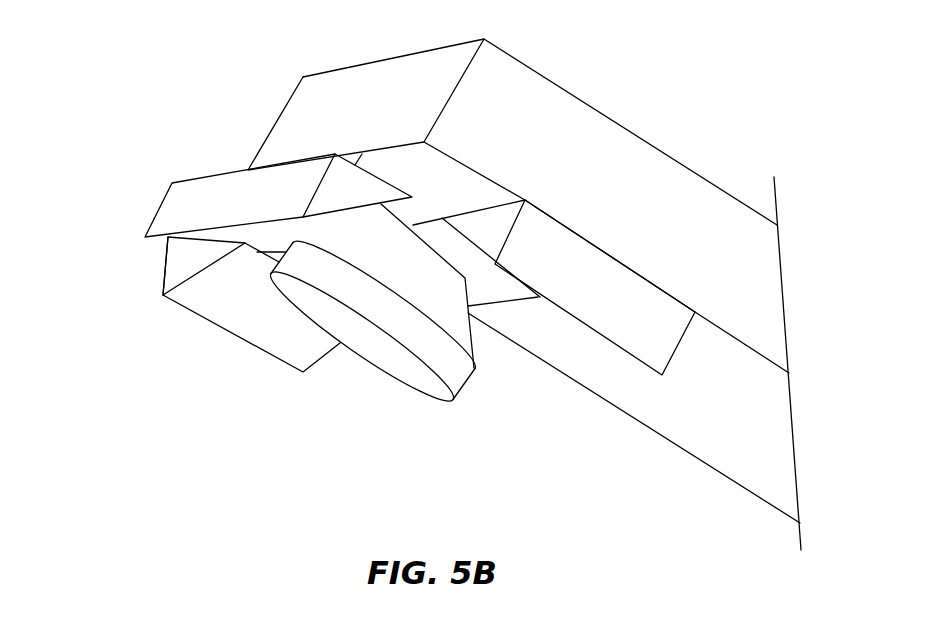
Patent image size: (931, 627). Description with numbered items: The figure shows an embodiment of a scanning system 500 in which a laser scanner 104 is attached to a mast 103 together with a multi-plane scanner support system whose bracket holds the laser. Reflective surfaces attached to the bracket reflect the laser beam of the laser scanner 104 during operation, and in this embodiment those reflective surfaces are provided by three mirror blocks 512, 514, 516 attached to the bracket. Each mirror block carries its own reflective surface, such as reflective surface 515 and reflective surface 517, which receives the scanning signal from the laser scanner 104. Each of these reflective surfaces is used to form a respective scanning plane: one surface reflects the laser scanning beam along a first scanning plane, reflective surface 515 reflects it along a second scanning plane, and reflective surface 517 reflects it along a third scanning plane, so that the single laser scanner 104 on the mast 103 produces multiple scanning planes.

The scanning system 500 is at (170, 107).
The mast 103 is at (527, 151).
The mirror block 512 is at (173, 200).
The mirror block 514 is at (172, 263).
The reflective surface 515 is at (222, 308).
The laser scanner 104 is at (362, 343).
The mirror block 516 is at (625, 310).
The reflective surface 517 is at (552, 333).